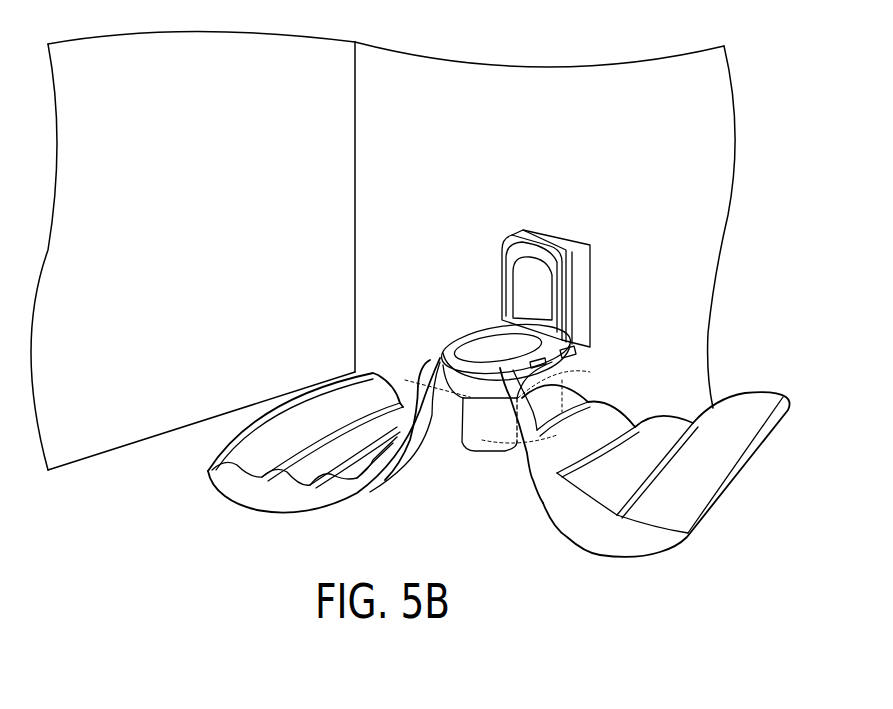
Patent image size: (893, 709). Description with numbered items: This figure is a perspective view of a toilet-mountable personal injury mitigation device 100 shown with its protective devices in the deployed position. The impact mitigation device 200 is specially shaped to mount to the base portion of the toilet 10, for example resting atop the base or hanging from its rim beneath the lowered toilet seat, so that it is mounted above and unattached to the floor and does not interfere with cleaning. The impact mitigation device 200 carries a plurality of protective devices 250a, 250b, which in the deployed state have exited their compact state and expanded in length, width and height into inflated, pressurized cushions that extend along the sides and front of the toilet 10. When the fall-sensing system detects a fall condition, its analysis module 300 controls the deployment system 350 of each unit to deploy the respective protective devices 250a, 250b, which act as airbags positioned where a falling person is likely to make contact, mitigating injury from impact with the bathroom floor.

The toilet 10 is at (487, 440).
The personal injury mitigation device 100 is at (655, 345).
The impact mitigation device 200 is at (440, 352).
The protective device 250a is at (305, 408).
The protective device 250b is at (663, 423).
The analysis module 300 is at (560, 365).
The deployment system 350 is at (573, 355).